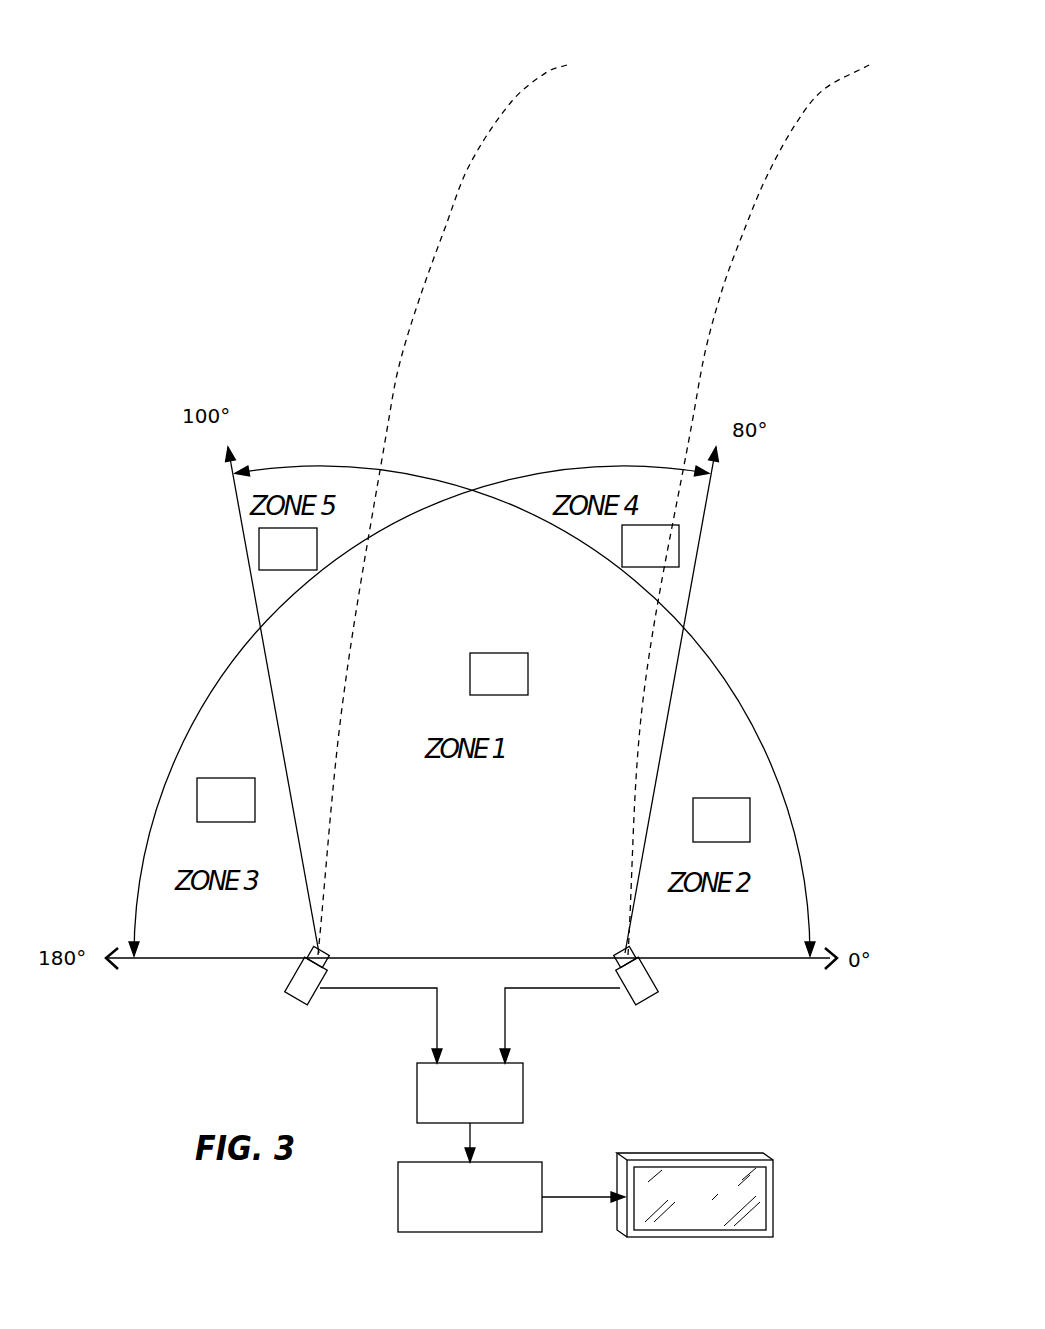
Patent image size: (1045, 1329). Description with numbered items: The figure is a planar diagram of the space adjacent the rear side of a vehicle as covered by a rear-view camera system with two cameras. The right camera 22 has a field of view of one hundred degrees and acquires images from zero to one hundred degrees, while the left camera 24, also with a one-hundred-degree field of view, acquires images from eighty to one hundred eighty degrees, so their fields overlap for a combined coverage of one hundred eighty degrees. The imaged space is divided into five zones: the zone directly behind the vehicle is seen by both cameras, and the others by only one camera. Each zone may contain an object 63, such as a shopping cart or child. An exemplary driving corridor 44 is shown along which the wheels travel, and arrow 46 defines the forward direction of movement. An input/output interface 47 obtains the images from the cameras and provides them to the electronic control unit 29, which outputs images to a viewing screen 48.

The right camera 22 is at (296, 983).
The left camera 24 is at (640, 988).
The electronic control unit 29 is at (517, 1160).
The driving corridor 44 is at (724, 293).
The arrow 46 is at (612, 176).
The input/output interface 47 is at (525, 1088).
The viewing screen 48 is at (740, 1152).
The object 63 is at (280, 572).